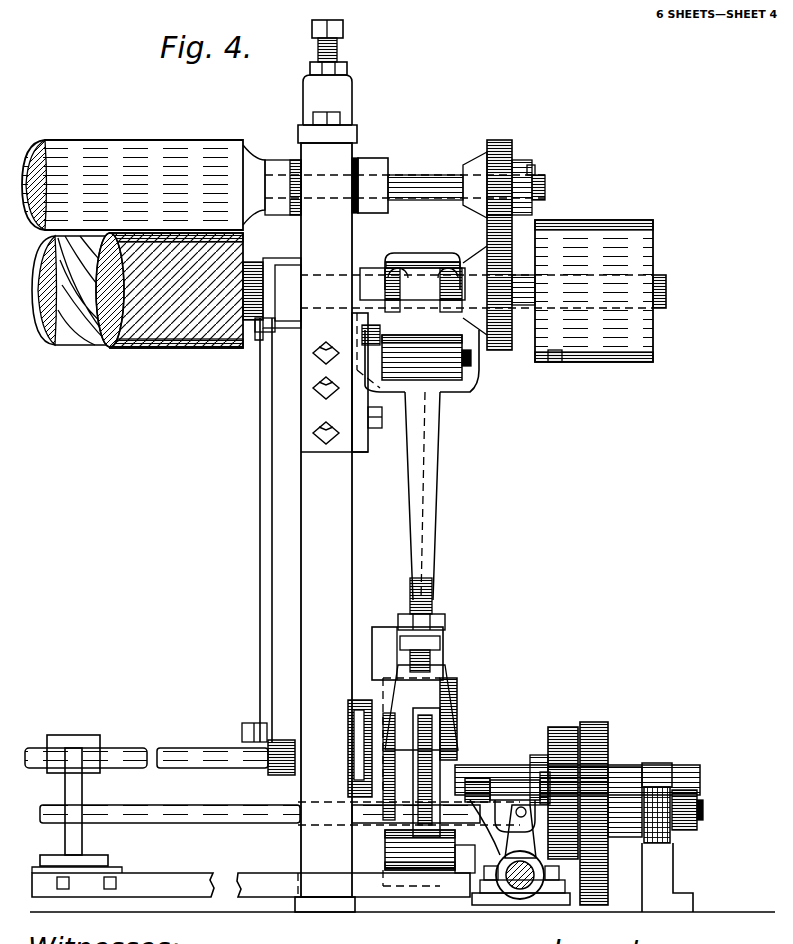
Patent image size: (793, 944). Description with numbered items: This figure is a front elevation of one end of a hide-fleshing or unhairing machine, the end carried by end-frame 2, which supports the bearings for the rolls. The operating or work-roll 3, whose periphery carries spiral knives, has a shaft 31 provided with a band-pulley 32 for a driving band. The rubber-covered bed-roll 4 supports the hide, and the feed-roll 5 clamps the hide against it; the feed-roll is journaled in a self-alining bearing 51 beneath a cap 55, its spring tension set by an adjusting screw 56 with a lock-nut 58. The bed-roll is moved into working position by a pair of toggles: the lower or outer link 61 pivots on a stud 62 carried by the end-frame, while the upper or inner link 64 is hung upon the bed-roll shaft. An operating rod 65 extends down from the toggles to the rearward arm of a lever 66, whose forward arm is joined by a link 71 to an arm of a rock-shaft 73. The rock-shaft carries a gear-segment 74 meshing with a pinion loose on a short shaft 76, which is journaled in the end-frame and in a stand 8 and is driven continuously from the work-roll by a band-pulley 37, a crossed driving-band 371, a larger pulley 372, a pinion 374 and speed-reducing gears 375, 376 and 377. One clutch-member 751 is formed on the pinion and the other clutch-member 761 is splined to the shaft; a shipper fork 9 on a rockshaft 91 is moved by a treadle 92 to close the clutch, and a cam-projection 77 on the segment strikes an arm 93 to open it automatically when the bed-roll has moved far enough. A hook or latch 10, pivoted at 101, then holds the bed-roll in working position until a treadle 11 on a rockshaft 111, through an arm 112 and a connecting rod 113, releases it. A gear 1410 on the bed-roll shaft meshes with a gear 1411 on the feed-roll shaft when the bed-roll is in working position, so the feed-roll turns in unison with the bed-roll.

The end-frame 2 is at (310, 570).
The operating or work-roll 3 is at (70, 347).
The bed-roll 4 is at (146, 350).
The feed-roll 5 is at (150, 148).
The stand 8 is at (665, 862).
The shipper fork 9 is at (575, 865).
The hook or latch 10 is at (393, 332).
The treadle 11 is at (84, 834).
The shaft of the operating or work-roll 31 is at (668, 276).
The band-pulley 32 is at (612, 222).
The band-pulley 37 is at (410, 262).
The self-alining bearing 51 is at (362, 158).
The cap 55 is at (357, 86).
The adjusting screw 56 is at (343, 27).
The lock-nut 58 is at (347, 66).
The lower or outer toggle link 61 is at (283, 337).
The stud 62 is at (472, 360).
The upper or inner toggle link 64 is at (415, 322).
The operating rod 65 is at (432, 530).
The lever 66 is at (350, 736).
The link 71 is at (382, 828).
The rock-shaft 73 is at (253, 826).
The gear-segment 74 is at (455, 728).
The short shaft 76 is at (477, 800).
The cam-projection 77 is at (473, 860).
The rockshaft 91 is at (520, 893).
The treadle 92 is at (250, 893).
The arm 93 is at (498, 858).
The pivot 101 is at (266, 335).
The rockshaft 111 is at (178, 746).
The arm 112 is at (272, 730).
The connecting rod 113 is at (262, 513).
The crossed driving-band 371 is at (437, 440).
The pulley 372 is at (455, 682).
The pinion 374 is at (567, 725).
The speed-reducing gear 375 is at (548, 758).
The speed-reducing gear 376 is at (617, 768).
The gear-wheel 377 is at (610, 726).
The clutch-member 751 is at (462, 776).
The clutch-member 761 is at (512, 778).
The gear 1410 is at (500, 355).
The gear 1411 is at (500, 140).